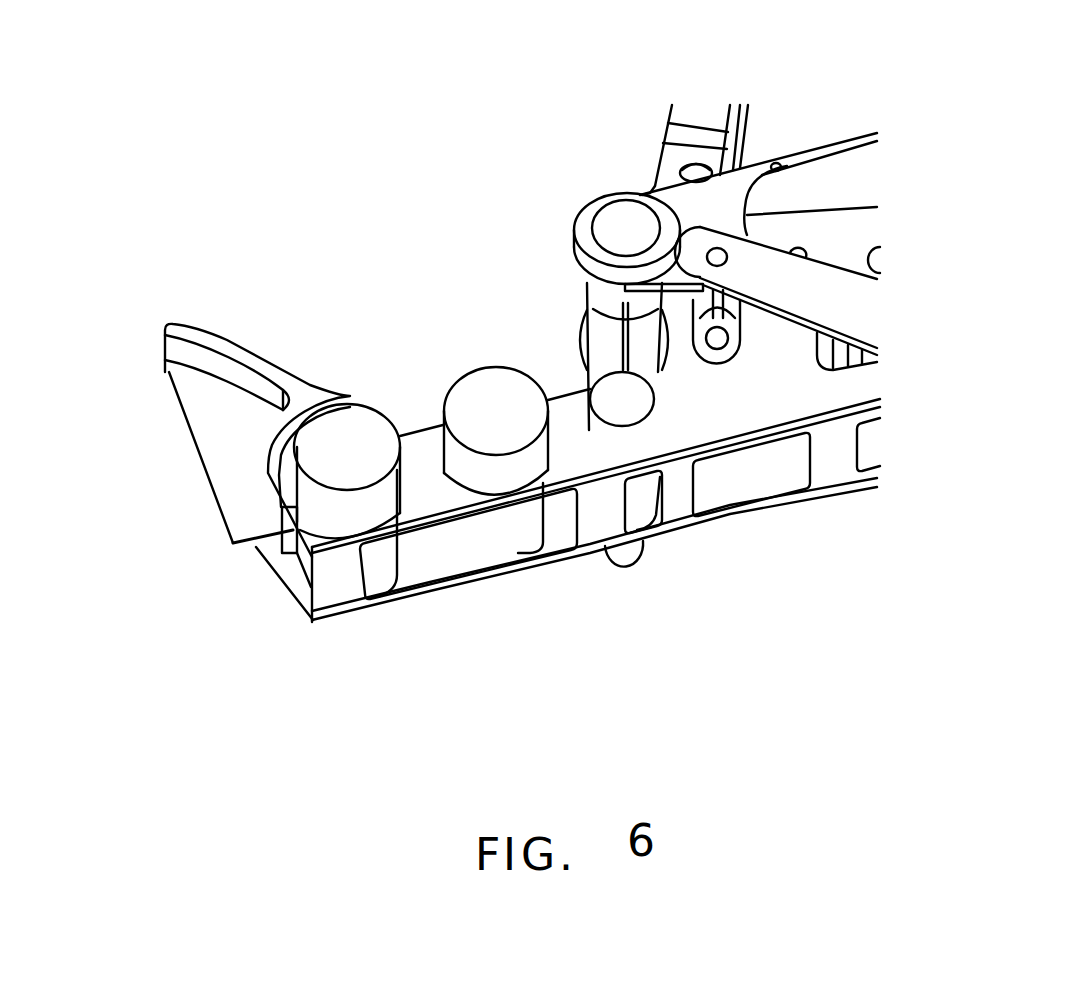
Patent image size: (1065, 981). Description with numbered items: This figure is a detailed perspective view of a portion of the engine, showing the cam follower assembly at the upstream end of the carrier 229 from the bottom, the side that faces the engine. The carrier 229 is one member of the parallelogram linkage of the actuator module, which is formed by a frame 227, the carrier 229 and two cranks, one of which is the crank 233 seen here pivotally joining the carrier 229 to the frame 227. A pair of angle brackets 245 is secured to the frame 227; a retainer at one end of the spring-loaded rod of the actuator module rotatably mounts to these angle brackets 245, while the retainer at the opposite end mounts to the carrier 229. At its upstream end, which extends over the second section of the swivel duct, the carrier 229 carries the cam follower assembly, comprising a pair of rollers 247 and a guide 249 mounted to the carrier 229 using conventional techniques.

The frame 227 is at (725, 193).
The carrier 229 is at (807, 400).
The crank 233 is at (643, 357).
The angle brackets 245 is at (840, 307).
The rollers 247 is at (334, 511).
The guide 249 is at (246, 520).